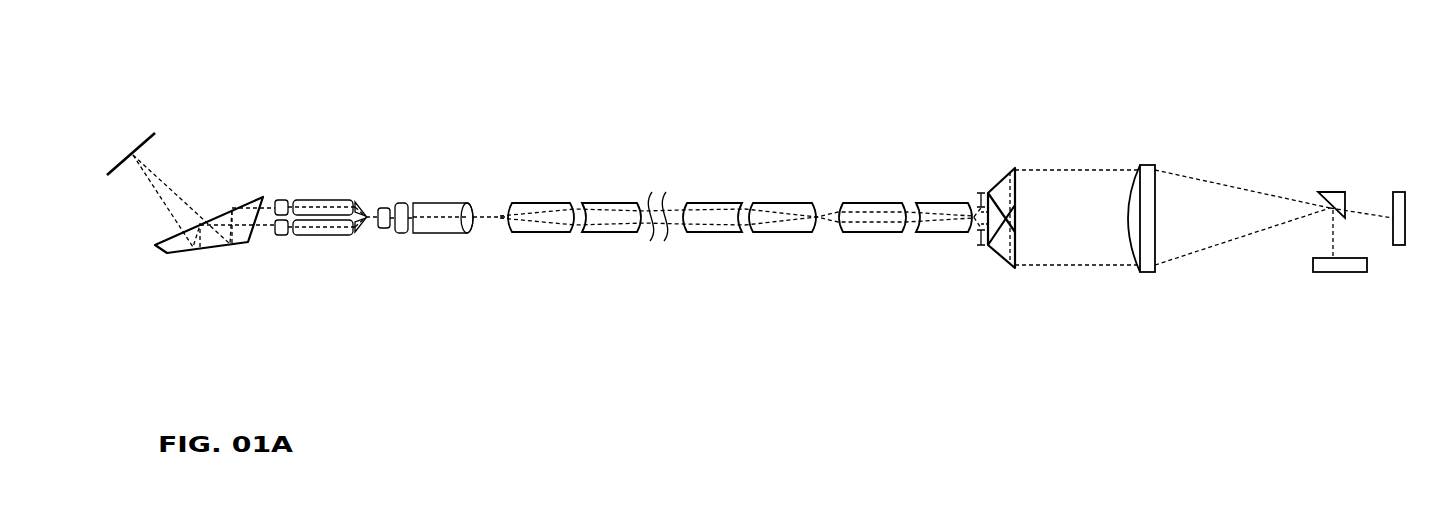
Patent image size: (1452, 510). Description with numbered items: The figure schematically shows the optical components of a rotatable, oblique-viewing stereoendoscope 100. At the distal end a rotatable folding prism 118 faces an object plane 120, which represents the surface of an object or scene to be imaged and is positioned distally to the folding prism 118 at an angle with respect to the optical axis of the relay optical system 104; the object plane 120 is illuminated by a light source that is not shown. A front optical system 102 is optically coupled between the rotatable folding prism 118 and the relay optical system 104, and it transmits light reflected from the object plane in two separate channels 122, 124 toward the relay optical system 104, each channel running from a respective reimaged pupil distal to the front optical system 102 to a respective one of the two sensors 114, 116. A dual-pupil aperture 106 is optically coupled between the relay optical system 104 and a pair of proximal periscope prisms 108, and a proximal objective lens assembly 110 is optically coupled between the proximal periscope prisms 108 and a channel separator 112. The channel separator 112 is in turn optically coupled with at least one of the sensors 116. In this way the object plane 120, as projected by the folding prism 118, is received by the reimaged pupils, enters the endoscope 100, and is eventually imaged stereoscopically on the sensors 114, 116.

The rotatable, oblique-viewing stereoendoscope 100 is at (687, 122).
The front optical system 102 is at (473, 262).
The relay optical system 104 is at (973, 257).
The dual-pupil aperture 106 is at (979, 181).
The proximal periscope prisms 108 is at (1000, 258).
The proximal objective lens assembly 110 is at (1148, 275).
The channel separator 112 is at (1341, 190).
The sensor 114 is at (1340, 276).
The sensor 116 is at (1402, 248).
The rotatable folding prism 118 is at (203, 257).
The object plane 120 is at (125, 143).
The channel 122 is at (180, 193).
The channel 124 is at (157, 193).